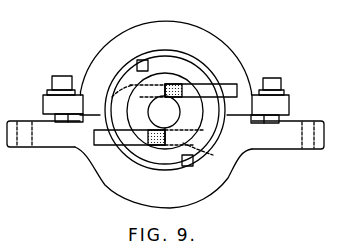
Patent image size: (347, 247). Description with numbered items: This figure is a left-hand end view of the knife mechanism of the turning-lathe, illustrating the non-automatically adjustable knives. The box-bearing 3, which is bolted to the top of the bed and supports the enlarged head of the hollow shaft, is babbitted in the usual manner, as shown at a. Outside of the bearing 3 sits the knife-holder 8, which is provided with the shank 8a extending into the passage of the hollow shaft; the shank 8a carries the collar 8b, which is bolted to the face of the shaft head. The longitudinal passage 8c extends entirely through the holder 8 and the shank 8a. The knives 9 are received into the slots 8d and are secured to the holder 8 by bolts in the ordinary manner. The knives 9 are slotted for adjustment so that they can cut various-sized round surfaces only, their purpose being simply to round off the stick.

The box-bearing 3 is at (231, 168).
The babbitt a is at (177, 51).
The knife-holder 8 is at (173, 73).
The shank 8a is at (116, 97).
The collar 8b is at (136, 67).
The longitudinal passage 8c is at (164, 112).
The slots 8d is at (200, 150).
The knives 9 is at (228, 84).